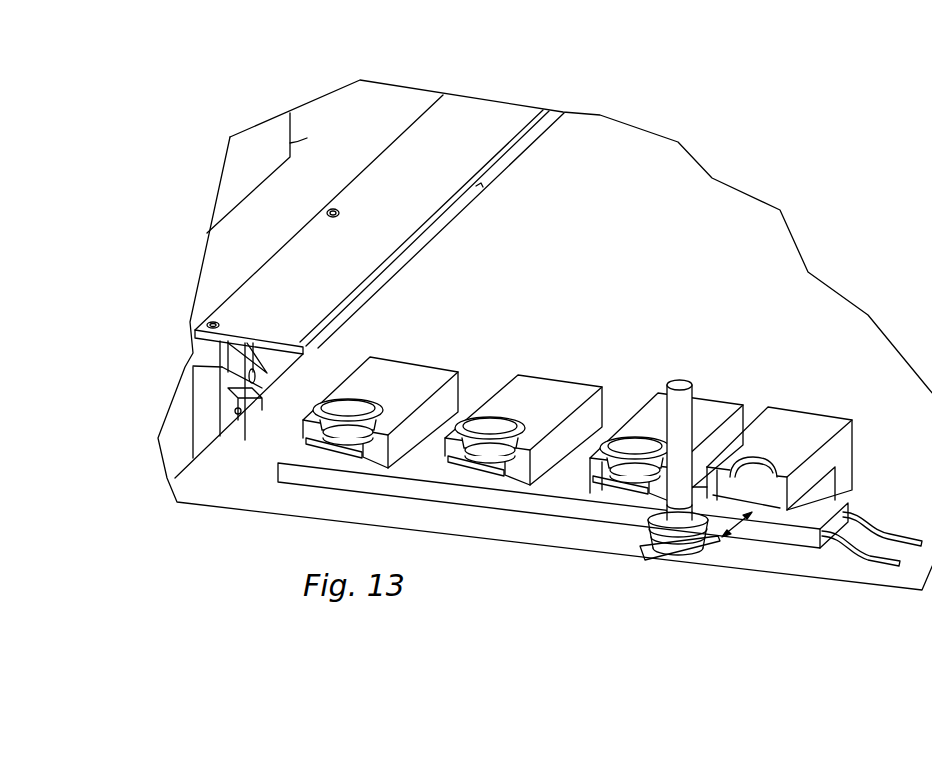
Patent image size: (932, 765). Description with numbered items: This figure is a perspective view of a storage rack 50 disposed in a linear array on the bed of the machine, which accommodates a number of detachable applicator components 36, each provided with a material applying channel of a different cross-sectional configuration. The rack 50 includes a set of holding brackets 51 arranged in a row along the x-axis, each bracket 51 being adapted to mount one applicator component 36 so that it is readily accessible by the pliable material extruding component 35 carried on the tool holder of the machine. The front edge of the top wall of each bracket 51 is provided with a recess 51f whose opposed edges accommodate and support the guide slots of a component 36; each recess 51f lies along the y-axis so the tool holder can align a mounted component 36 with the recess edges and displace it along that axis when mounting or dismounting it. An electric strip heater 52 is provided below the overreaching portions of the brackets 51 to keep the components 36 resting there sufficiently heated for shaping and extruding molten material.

The storage rack 50 is at (558, 337).
The pliable material extruding component 35 is at (683, 392).
The applicator component 36 is at (661, 556).
The holding bracket 51 is at (832, 418).
The recess 51f is at (792, 476).
The electric strip heater 52 is at (807, 540).